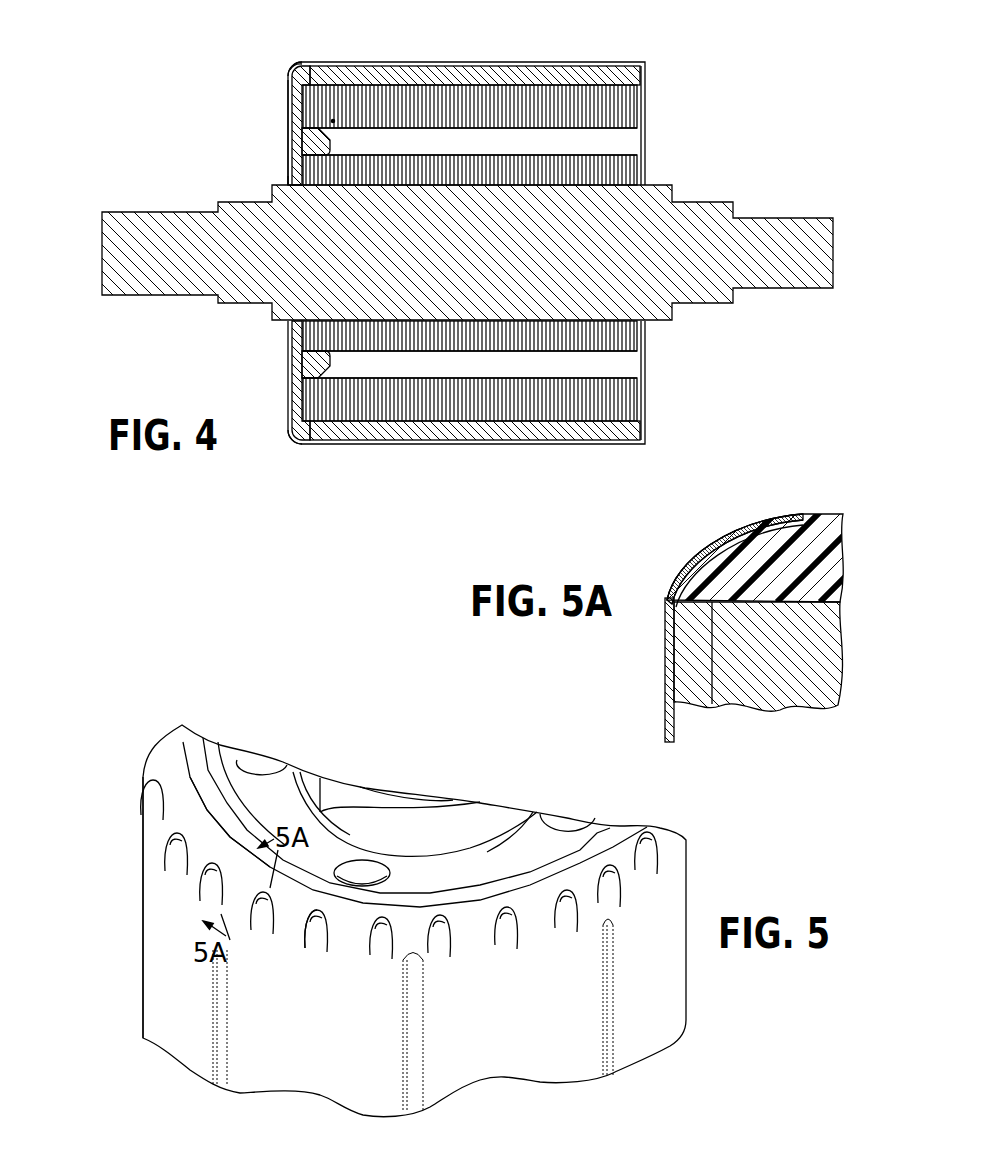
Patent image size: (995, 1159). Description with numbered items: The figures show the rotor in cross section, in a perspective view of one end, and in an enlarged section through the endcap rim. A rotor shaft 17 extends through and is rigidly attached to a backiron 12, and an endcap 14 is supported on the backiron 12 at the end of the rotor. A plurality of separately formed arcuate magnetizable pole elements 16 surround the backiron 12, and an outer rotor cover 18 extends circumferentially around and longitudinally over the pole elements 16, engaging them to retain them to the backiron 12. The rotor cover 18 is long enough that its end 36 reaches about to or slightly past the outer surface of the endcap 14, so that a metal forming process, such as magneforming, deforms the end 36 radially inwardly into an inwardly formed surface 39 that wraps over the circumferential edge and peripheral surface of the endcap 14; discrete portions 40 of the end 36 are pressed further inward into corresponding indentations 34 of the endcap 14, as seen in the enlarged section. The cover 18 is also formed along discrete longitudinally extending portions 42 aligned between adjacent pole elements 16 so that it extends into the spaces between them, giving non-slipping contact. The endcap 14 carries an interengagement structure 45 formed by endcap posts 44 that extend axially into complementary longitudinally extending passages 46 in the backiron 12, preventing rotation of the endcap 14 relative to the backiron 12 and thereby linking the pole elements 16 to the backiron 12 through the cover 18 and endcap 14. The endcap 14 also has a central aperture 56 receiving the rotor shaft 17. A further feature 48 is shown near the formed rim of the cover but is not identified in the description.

In FIG. 4, the backiron 12 is at (598, 95).
In FIG. 5A, the backiron 12 is at (841, 686).
In FIG. 4, the endcap 14 is at (283, 373).
In FIG. 5A, the endcap 14 is at (828, 506).
In FIG. 5, the endcap 14 is at (244, 818).
In FIG. 4, the magnetizable pole elements 16 is at (550, 74).
In FIG. 5A, the magnetizable pole elements 16 is at (690, 690).
In FIG. 4, the rotor shaft 17 is at (760, 247).
In FIG. 4, the rotor cover 18 is at (497, 54).
In FIG. 5A, the rotor cover 18 is at (658, 666).
In FIG. 5, the rotor cover 18 is at (184, 901).
In FIG. 5A, the indentations 34 is at (752, 530).
In FIG. 4, the end of the rotor cover 36 is at (286, 87).
In FIG. 5A, the end of the rotor cover 36 is at (793, 511).
In FIG. 5, the end of the rotor cover 36 is at (302, 906).
In FIG. 4, the inwardly formed surface 39 is at (291, 68).
In FIG. 5A, the inwardly formed surface 39 is at (704, 548).
In FIG. 5, the inwardly formed surface 39 is at (195, 863).
In FIG. 5A, the discrete portions 40 is at (735, 545).
In FIG. 5, the discrete portions 40 is at (392, 960).
In FIG. 5, the longitudinally extending portions 42 is at (413, 1042).
In FIG. 4, the endcap posts 44 is at (323, 138).
In FIG. 4, the interengagement structure 45 is at (333, 120).
In FIG. 4, the longitudinally extending passages 46 is at (458, 140).
In FIG. 4, the flange 48 is at (306, 62).
In FIG. 4, the central aperture 56 is at (287, 176).